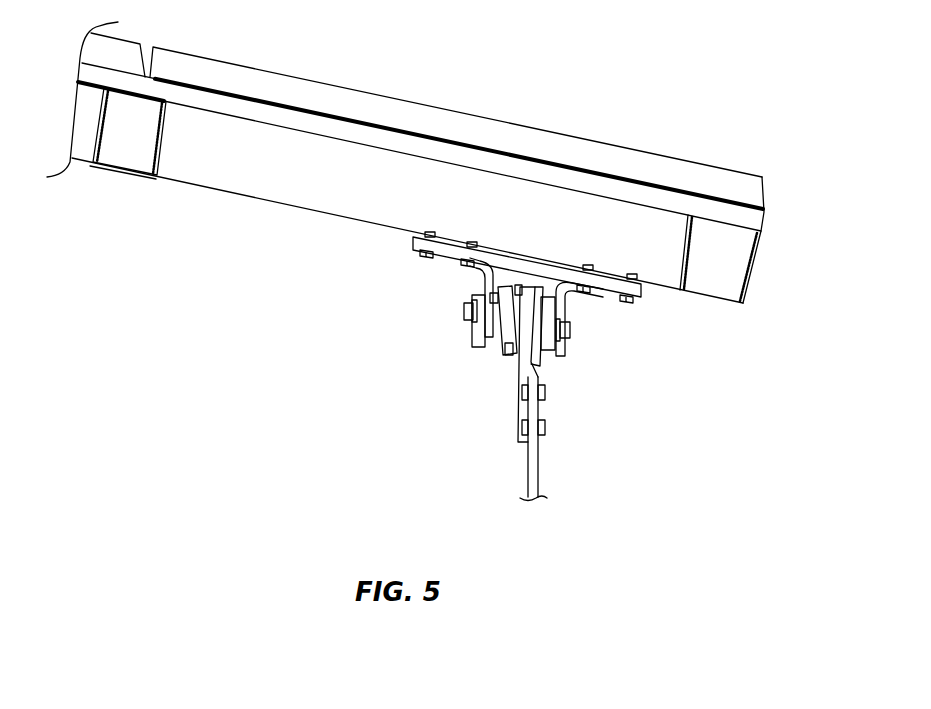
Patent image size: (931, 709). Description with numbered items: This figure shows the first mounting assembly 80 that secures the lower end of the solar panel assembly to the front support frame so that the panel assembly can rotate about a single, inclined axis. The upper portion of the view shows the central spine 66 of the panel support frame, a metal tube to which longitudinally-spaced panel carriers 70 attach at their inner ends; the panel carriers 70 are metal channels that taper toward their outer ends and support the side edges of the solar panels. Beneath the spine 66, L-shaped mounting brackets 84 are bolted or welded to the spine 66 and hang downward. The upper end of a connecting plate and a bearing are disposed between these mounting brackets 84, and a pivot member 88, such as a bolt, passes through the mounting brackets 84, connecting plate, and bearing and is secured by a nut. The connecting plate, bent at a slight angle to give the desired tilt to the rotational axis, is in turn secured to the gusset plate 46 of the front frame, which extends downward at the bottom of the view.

The gusset plate 46 is at (533, 480).
The central spine 66 is at (435, 185).
The panel carrier 70 is at (172, 117).
The first mounting assembly 80 is at (408, 328).
The L-shaped mounting bracket 84 is at (432, 253).
The pivot member 88 is at (507, 325).